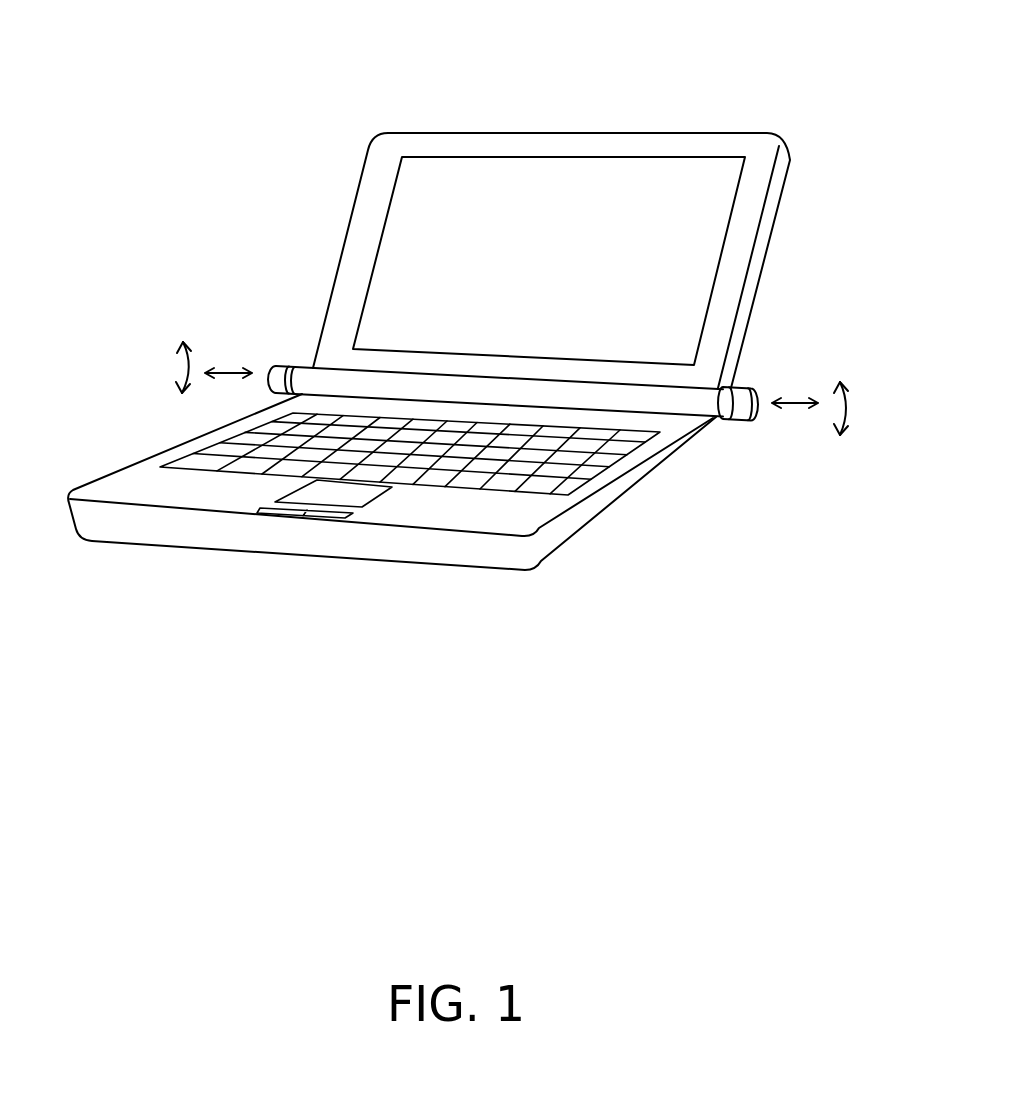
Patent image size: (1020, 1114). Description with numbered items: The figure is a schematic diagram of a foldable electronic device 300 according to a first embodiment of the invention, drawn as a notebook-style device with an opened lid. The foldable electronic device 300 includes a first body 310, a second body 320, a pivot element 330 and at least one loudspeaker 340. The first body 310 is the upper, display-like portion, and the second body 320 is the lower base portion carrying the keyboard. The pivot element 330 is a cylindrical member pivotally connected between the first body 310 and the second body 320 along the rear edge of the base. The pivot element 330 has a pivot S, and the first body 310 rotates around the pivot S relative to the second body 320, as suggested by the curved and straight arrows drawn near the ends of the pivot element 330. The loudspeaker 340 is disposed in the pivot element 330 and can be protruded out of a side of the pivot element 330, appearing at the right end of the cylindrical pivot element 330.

The foldable electronic device 300 is at (465, 392).
The first body 310 is at (652, 142).
The second body 320 is at (553, 533).
The pivot element 330 is at (680, 398).
The loudspeaker 340 is at (738, 391).
The pivot S is at (795, 408).